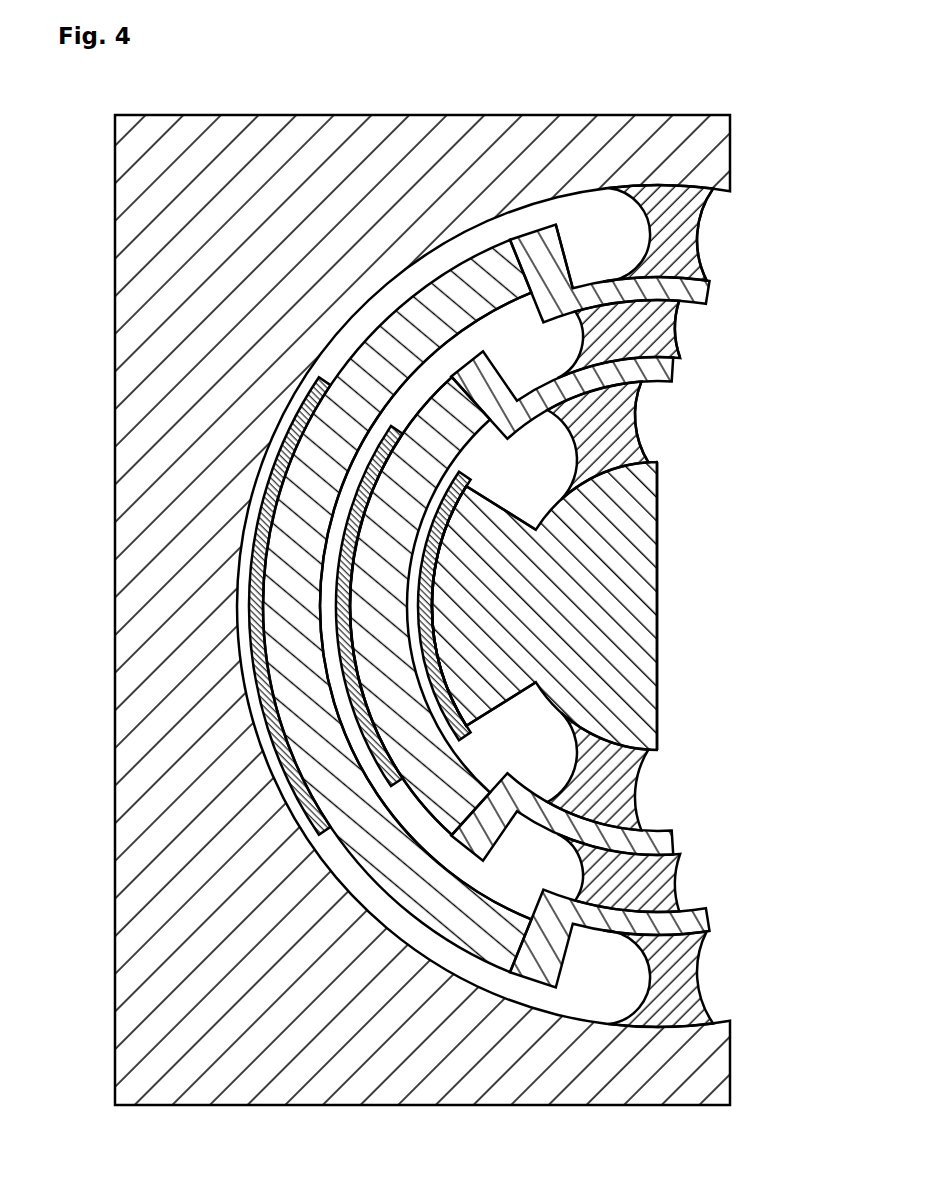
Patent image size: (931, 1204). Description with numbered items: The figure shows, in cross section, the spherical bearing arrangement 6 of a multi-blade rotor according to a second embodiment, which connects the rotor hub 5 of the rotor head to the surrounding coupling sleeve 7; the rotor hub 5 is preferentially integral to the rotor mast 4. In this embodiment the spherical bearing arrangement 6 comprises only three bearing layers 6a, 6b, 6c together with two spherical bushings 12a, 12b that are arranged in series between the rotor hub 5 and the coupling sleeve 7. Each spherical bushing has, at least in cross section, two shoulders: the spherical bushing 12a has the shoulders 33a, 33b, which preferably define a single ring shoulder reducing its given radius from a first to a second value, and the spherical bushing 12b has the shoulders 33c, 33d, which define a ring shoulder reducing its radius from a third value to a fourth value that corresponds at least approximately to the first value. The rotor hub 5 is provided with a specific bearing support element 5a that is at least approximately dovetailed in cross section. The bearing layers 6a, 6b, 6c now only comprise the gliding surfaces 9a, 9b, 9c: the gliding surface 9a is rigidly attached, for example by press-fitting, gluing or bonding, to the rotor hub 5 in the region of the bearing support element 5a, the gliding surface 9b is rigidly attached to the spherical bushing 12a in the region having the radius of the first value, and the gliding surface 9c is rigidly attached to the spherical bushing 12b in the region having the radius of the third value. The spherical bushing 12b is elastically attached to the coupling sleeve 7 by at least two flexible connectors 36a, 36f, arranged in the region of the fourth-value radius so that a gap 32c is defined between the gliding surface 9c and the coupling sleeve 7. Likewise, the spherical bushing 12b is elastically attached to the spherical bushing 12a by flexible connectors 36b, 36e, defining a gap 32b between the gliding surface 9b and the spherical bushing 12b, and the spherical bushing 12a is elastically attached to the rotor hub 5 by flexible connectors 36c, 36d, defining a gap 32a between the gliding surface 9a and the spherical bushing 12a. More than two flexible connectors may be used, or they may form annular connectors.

The rotor mast 4 is at (628, 617).
The rotor hub 5 is at (663, 520).
The bearing support element 5a is at (455, 575).
The spherical bearing arrangement 6 is at (706, 470).
The bearing layer 6a is at (656, 401).
The bearing layer 6b is at (681, 320).
The bearing layer 6c is at (712, 245).
The coupling sleeve 7 is at (251, 180).
The gliding surface 9a is at (455, 700).
The gliding surface 9b is at (375, 780).
The gliding surface 9c is at (258, 620).
The spherical bushing 12a is at (440, 415).
The spherical bushing 12b is at (325, 440).
The gap 32a is at (414, 688).
The gap 32b is at (328, 676).
The gap 32c is at (243, 678).
The shoulder 33a is at (517, 247).
The shoulder 33b is at (508, 848).
The shoulder 33c is at (570, 243).
The shoulder 33d is at (569, 958).
The flexible connector 36a is at (700, 232).
The flexible connector 36b is at (650, 336).
The flexible connector 36c is at (625, 430).
The flexible connector 36d is at (622, 782).
The flexible connector 36e is at (652, 876).
The flexible connector 36f is at (700, 980).